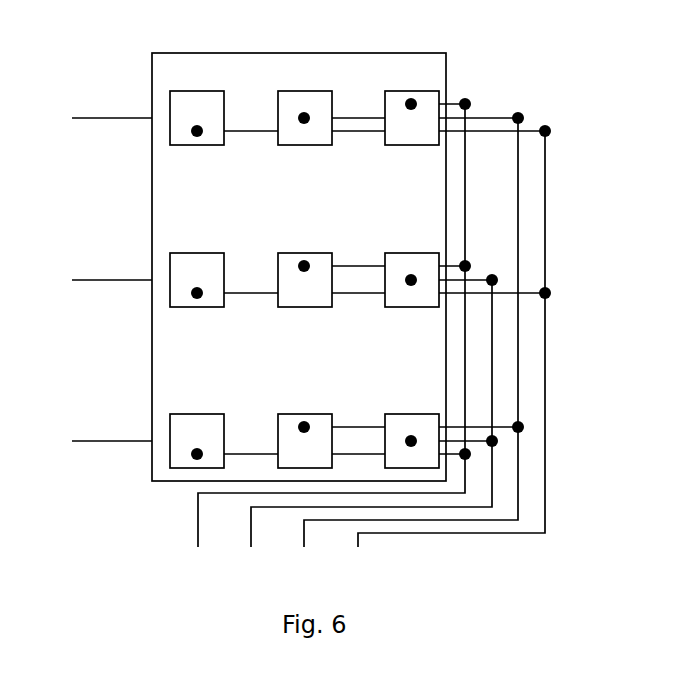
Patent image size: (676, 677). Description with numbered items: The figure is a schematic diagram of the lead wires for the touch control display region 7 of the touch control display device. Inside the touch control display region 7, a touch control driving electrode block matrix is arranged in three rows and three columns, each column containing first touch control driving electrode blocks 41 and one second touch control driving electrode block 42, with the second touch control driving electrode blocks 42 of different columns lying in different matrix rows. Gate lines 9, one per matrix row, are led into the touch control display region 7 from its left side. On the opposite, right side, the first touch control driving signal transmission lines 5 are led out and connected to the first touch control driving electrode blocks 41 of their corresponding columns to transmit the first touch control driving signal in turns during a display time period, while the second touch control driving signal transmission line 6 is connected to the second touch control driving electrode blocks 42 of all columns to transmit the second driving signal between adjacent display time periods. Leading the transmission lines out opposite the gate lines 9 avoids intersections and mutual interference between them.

The first touch control driving signal transmission line 5 is at (437, 507).
The second touch control driving signal transmission line 6 is at (198, 515).
The touch control display region 7 is at (285, 53).
The gate line 9 is at (112, 266).
The first touch control driving electrode block 41 is at (210, 90).
The second touch control driving electrode block 42 is at (425, 90).